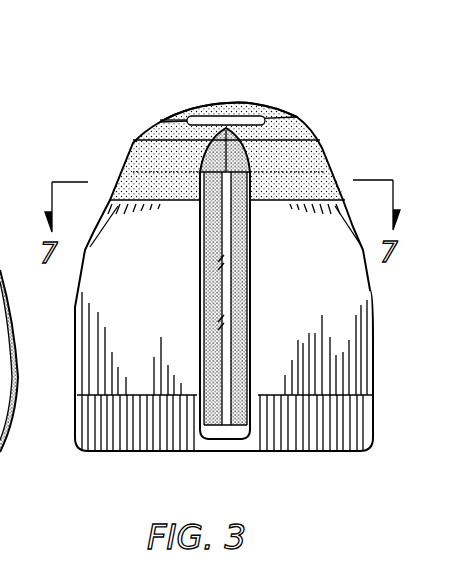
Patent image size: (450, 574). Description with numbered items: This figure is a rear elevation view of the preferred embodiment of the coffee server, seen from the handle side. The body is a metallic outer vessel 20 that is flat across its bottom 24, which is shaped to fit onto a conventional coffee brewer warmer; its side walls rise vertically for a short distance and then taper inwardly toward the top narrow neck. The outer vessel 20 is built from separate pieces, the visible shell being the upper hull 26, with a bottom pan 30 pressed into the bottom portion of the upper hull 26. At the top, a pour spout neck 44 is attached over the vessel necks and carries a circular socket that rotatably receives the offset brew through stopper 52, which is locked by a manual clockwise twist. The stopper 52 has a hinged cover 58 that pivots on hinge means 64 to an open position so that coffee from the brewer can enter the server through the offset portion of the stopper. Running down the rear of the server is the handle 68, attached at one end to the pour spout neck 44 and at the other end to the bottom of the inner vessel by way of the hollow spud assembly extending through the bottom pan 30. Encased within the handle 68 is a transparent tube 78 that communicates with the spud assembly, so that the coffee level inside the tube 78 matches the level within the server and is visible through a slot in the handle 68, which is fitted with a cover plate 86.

The outer vessel 20 is at (68, 303).
The bottom 24 is at (273, 437).
The upper hull 26 is at (72, 392).
The bottom pan 30 is at (133, 452).
The pour spout neck 44 is at (322, 148).
The offset brew through stopper 52 is at (230, 100).
The hinged cover 58 is at (270, 108).
The hinge means 64 is at (197, 118).
The handle 68 is at (200, 316).
The transparent tube 78 is at (222, 417).
The cover plate 86 is at (200, 188).